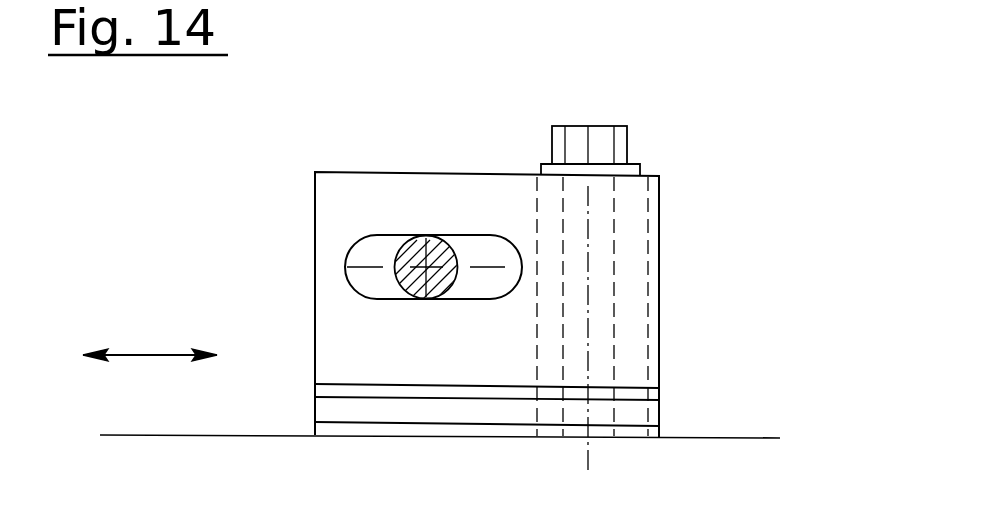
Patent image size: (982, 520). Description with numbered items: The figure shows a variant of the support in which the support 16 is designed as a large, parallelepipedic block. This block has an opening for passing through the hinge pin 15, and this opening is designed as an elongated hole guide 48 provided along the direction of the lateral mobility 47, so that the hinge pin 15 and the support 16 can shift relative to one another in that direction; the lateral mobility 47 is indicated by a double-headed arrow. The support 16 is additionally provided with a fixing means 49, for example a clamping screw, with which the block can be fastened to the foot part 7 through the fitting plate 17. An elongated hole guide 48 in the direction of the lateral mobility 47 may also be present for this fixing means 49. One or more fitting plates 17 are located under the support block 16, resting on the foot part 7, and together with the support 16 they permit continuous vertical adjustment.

The foot part 7 is at (659, 285).
The hinge pin 15 is at (436, 257).
The support 16 is at (391, 199).
The fitting plate 17 is at (653, 430).
The lateral mobility 47 is at (148, 353).
The elongated hole guide 48 is at (375, 257).
The fixing means 49 is at (621, 140).